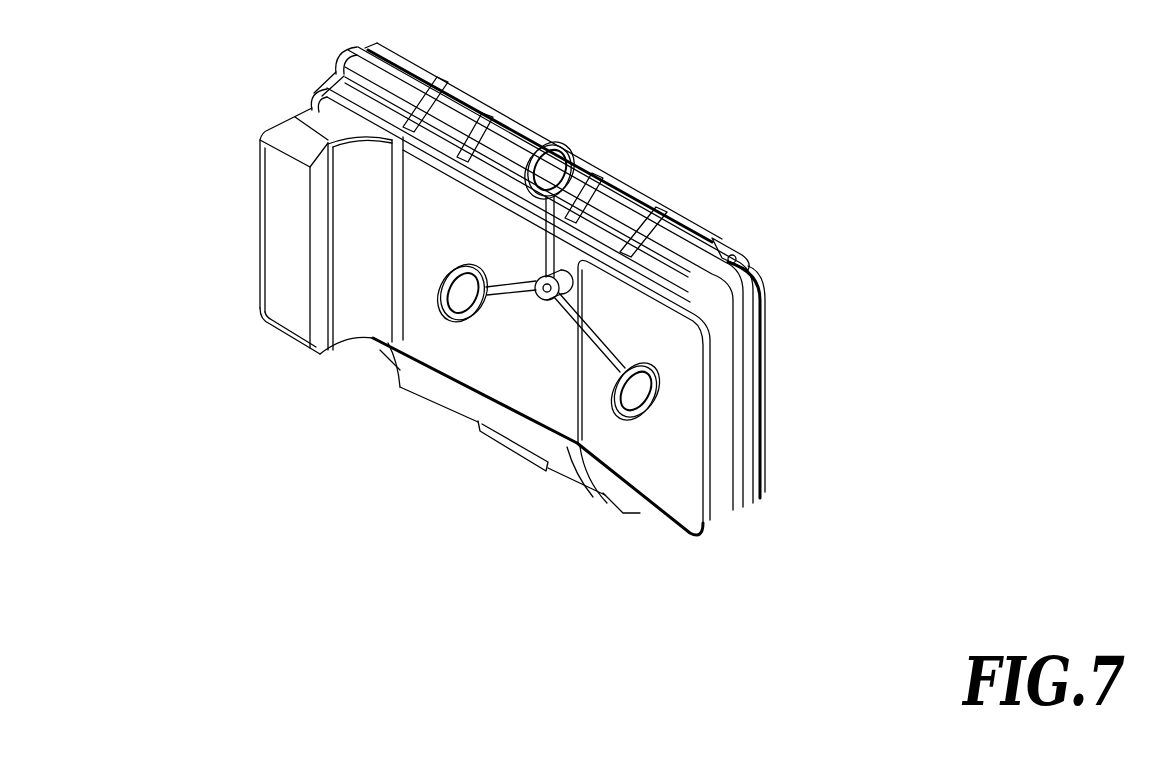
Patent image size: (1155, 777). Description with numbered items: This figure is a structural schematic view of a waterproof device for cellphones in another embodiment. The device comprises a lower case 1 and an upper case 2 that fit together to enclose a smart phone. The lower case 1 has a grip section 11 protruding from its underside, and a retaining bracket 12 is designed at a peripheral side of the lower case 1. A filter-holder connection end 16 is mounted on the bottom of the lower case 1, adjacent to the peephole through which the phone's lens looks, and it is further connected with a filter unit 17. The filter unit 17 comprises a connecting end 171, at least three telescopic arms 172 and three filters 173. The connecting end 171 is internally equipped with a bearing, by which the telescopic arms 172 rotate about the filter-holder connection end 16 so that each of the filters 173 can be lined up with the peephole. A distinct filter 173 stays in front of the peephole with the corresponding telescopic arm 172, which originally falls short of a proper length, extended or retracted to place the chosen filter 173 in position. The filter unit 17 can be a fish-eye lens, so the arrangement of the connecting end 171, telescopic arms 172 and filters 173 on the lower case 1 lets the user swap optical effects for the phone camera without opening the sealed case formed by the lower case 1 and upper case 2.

The lower case 1 is at (720, 502).
The upper case 2 is at (760, 272).
The grip section 11 is at (285, 267).
The retaining bracket 12 is at (410, 358).
The filter-holder connection end 16 is at (600, 175).
The filter unit 17 is at (455, 650).
The connecting end 171 is at (567, 293).
The telescopic arm 172 is at (580, 330).
The filter 173 is at (623, 403).